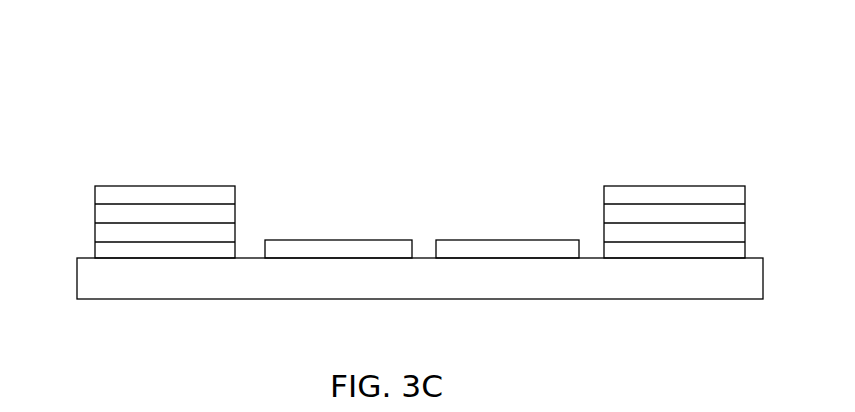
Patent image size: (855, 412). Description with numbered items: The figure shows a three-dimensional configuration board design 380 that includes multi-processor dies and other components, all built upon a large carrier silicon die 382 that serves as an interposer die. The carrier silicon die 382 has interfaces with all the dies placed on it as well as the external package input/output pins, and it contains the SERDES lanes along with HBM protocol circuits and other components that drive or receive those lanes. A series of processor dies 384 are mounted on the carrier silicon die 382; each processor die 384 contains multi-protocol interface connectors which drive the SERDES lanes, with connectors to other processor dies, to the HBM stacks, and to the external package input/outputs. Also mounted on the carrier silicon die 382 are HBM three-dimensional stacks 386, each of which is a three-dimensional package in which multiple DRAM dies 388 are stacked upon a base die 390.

The 3D configuration board design 380 is at (110, 66).
The carrier silicon die 382 is at (543, 288).
The processor die 384 is at (266, 240).
The HBM 3D stack 386 is at (100, 192).
The DRAM die 388 is at (735, 216).
The base die 390 is at (735, 251).